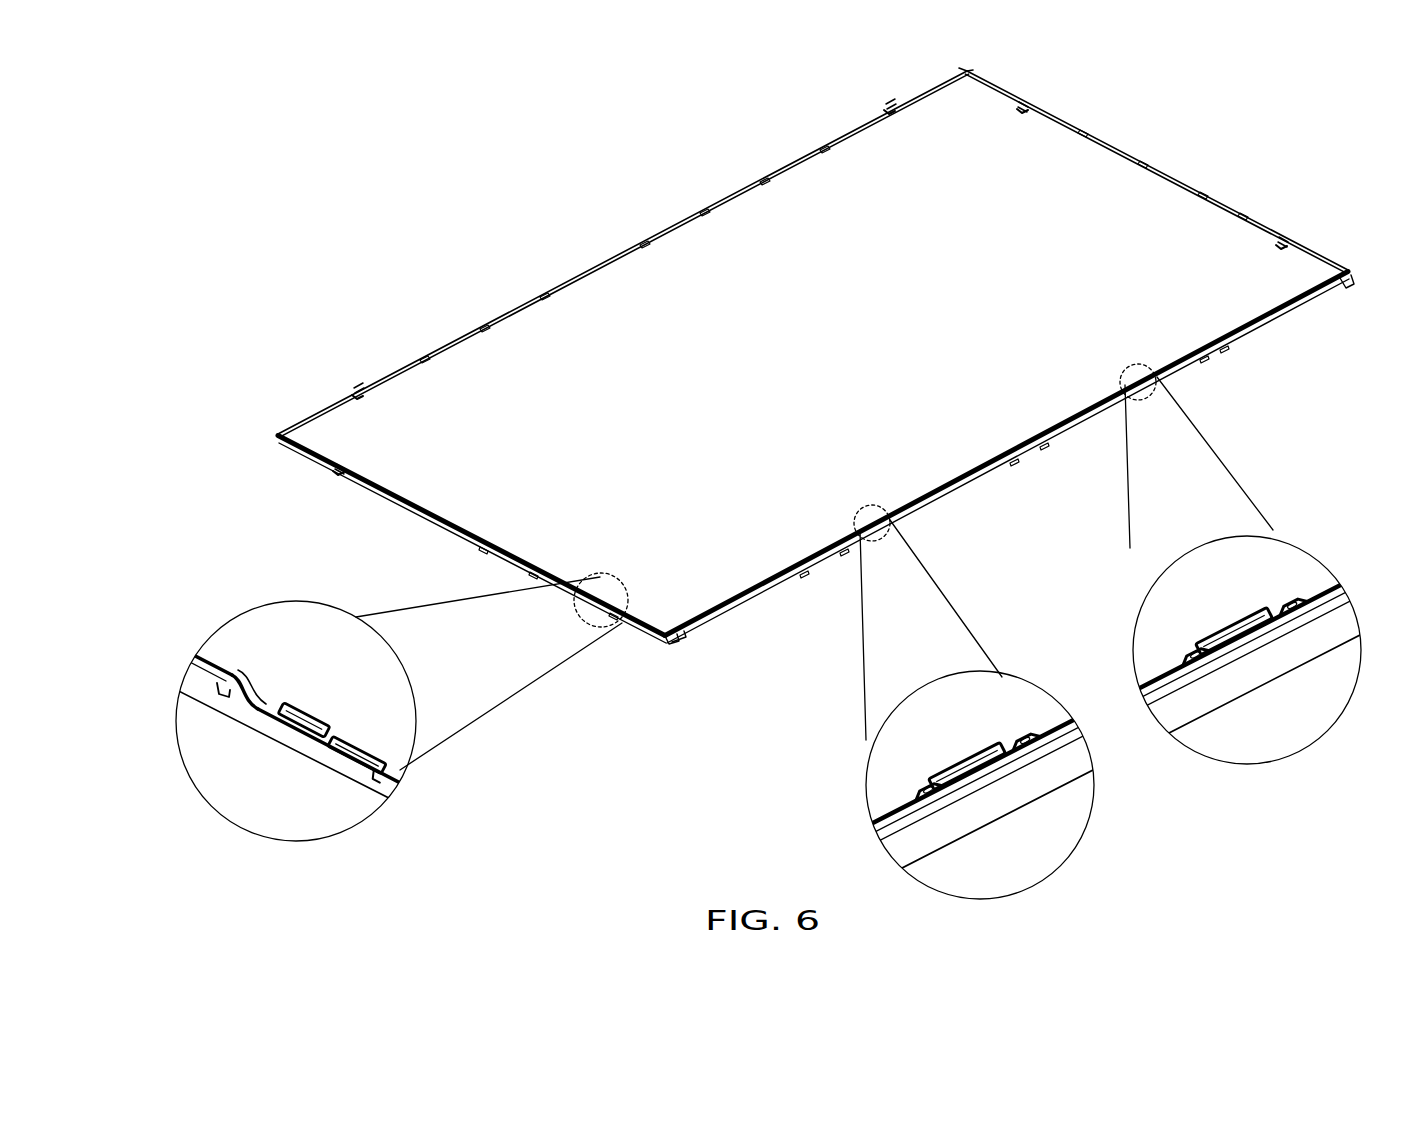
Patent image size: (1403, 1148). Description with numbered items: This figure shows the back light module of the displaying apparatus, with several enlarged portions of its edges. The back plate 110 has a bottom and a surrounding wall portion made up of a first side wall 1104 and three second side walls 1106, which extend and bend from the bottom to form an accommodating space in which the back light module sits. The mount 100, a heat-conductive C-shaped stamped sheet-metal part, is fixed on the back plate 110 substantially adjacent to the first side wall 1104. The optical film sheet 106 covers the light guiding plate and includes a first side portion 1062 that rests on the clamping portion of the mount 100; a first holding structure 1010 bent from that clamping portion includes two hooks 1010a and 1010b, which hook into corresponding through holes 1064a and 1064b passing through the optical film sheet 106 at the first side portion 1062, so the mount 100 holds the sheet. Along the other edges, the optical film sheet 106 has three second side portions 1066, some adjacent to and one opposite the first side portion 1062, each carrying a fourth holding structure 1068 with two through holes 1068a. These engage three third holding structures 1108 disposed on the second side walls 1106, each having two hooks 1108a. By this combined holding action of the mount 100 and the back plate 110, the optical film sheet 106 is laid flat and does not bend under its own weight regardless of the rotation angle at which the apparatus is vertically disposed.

The optical film sheet 106 is at (578, 305).
The back plate 110 is at (1268, 316).
The second side walls 1106 is at (668, 228).
The third holding structures 1108 is at (888, 99).
The fourth holding structures 1068 is at (899, 112).
The through holes 1068a is at (284, 696).
The hooks 1108a is at (313, 700).
The second side portions 1066 is at (222, 644).
The first holding structure 1010 is at (870, 542).
The hook 1010a is at (982, 762).
The hook 1010b is at (1249, 627).
The first side wall 1104 is at (1000, 472).
The first side portion 1062 is at (965, 741).
The through hole 1064a is at (1005, 745).
The through hole 1064b is at (1272, 610).
The mount 100 is at (915, 828).